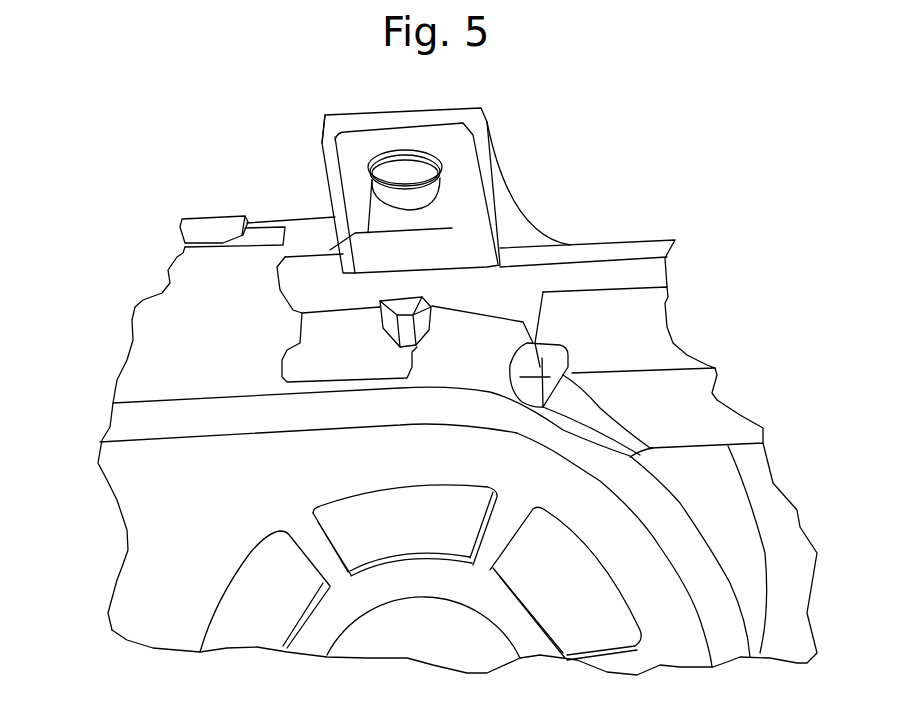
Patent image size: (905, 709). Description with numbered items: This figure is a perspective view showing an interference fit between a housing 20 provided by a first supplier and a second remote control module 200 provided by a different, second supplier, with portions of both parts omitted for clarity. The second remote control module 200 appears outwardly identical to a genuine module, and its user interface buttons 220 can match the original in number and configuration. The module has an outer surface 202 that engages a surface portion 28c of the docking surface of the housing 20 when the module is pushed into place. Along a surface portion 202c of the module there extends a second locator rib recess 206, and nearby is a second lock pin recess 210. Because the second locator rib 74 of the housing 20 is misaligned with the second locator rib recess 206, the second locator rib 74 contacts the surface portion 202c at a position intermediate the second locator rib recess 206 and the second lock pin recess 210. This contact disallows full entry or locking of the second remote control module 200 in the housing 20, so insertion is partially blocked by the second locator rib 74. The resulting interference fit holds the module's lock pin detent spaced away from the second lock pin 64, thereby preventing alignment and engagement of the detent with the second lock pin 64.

The housing 20 is at (568, 253).
The surface portion 28c is at (465, 318).
The second lock pin 64 is at (550, 387).
The second locator rib 74 is at (390, 330).
The second remote control module 200 is at (122, 540).
The outer surface 202 is at (217, 506).
The surface portion 202c is at (137, 361).
The second locator rib recess 206 is at (300, 343).
The second lock pin recess 210 is at (596, 428).
The user interface buttons 220 is at (425, 528).